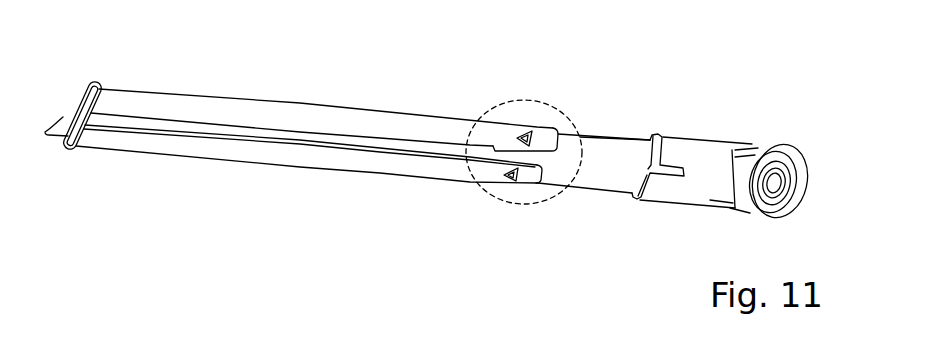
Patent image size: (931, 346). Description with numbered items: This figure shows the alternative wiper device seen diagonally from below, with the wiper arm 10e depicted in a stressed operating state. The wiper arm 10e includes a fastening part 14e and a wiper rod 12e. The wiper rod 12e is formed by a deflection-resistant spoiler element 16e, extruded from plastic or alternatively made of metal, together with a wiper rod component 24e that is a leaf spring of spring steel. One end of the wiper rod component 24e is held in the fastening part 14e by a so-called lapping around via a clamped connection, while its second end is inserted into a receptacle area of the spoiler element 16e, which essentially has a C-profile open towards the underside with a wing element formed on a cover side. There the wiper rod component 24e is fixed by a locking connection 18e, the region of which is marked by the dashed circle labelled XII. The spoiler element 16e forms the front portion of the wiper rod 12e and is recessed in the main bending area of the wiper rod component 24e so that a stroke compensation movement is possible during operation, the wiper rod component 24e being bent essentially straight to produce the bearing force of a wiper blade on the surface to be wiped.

The wiper arm 10e is at (415, 95).
The wiper rod 12e is at (621, 117).
The fastening part 14e is at (722, 170).
The spoiler element 16e is at (263, 115).
The locking connection 18e is at (538, 127).
The wiper rod component 24e is at (602, 175).
The detail view XII is at (487, 188).